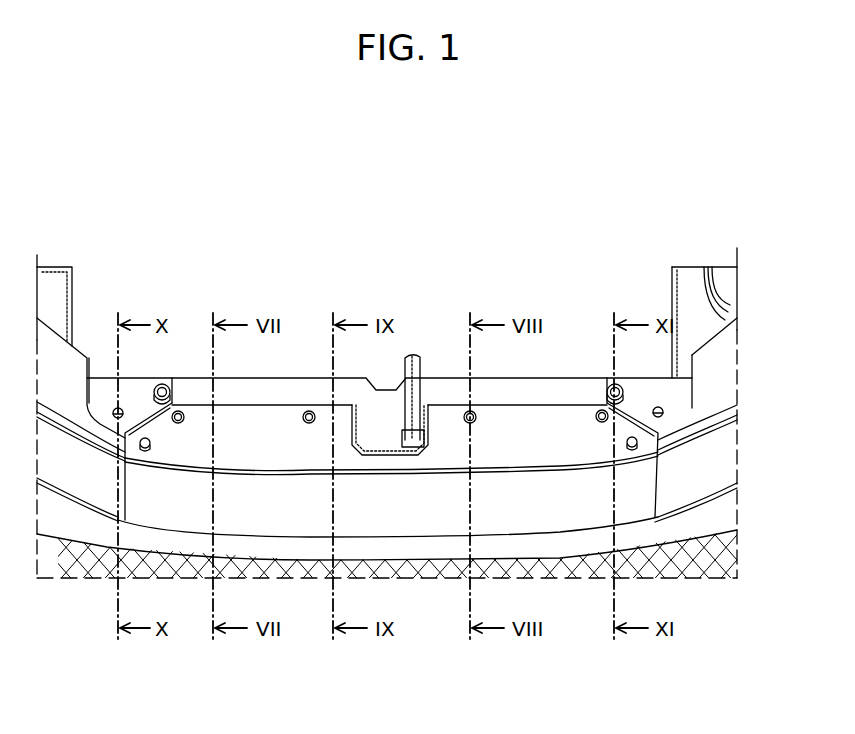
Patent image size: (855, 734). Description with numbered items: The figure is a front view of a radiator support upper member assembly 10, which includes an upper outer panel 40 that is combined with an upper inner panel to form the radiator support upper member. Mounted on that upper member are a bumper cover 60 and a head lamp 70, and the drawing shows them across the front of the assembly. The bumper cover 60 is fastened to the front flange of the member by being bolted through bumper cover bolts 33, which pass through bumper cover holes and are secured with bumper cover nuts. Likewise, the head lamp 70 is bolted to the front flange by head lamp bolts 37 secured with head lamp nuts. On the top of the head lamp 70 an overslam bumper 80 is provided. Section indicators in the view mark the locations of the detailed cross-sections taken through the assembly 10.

The radiator support upper member assembly 10 is at (313, 297).
The bumper cover bolt 33 is at (308, 410).
The head lamp bolt 37 is at (118, 408).
The upper outer panel 40 is at (443, 400).
The bumper cover 60 is at (178, 505).
The head lamp 70 is at (722, 368).
The overslam bumper 80 is at (163, 383).